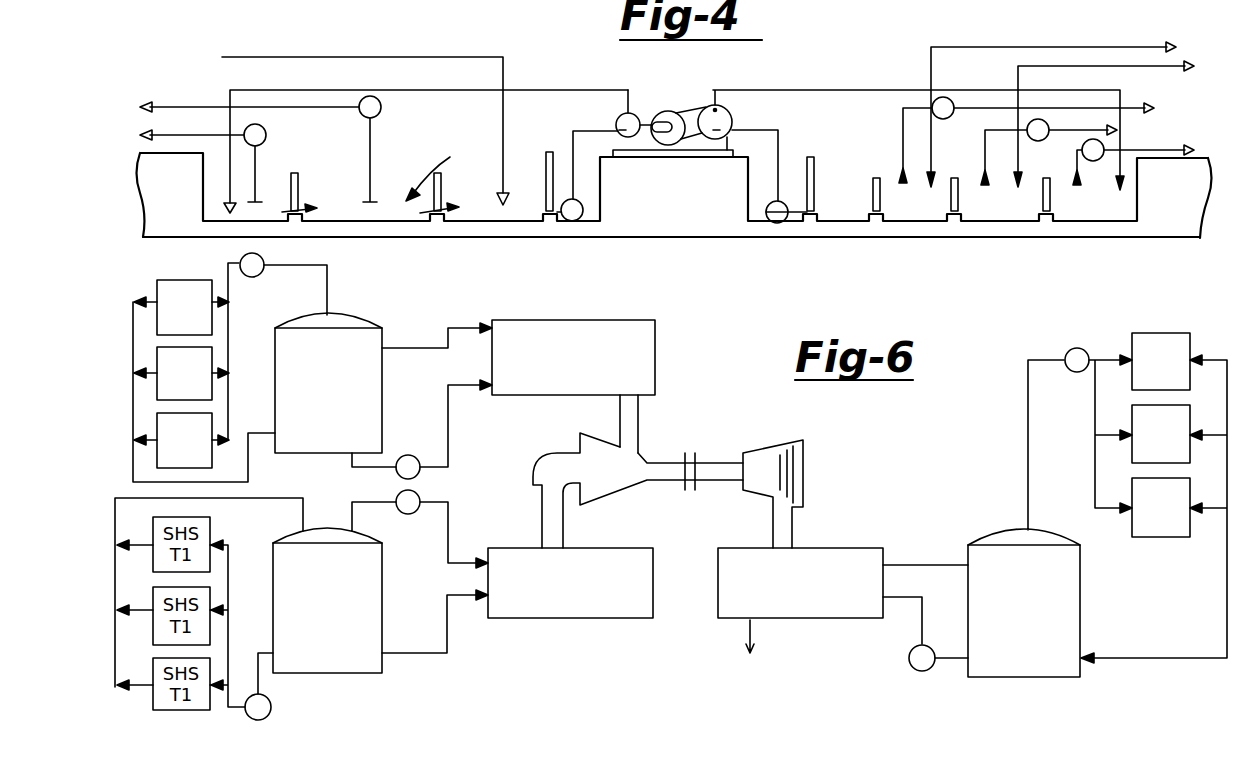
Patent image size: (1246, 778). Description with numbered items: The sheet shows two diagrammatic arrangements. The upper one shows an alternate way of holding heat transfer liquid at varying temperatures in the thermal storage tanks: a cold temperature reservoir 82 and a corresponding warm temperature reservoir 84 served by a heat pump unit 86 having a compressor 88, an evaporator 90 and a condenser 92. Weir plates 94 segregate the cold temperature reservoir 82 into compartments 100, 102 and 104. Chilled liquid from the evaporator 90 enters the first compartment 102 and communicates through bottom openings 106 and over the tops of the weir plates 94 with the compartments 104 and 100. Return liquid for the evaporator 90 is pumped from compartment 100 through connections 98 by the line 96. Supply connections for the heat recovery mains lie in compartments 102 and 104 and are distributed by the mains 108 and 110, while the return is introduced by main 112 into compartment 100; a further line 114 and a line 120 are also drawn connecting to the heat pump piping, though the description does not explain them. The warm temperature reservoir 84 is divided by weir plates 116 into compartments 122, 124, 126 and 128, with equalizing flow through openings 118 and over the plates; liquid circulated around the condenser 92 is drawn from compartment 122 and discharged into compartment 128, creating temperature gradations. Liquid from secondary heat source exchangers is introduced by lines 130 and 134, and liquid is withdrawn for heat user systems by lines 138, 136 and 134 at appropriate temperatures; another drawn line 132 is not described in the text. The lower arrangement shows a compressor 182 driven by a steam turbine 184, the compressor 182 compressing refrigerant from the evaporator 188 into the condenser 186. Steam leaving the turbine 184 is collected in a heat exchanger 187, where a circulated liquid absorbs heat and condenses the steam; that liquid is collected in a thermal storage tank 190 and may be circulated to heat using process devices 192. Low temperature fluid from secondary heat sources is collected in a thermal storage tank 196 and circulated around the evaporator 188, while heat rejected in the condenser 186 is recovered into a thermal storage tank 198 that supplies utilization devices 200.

In FIG. 4, the cold temperature reservoir 82 is at (188, 196).
In FIG. 4, the warm temperature reservoir 84 is at (1137, 218).
In FIG. 4, the heat pump unit 86 is at (675, 85).
In FIG. 4, the compressor 88 is at (683, 113).
In FIG. 4, the evaporator 90 is at (635, 112).
In FIG. 4, the condenser 92 is at (733, 118).
In FIG. 4, the weir plates 94 is at (298, 184).
In FIG. 4, the line 96 is at (573, 190).
In FIG. 4, the connections 98 is at (543, 214).
In FIG. 4, the compartment 100 is at (493, 204).
In FIG. 4, the compartment 102 is at (270, 170).
In FIG. 4, the compartment 104 is at (385, 217).
In FIG. 4, the bottom openings 106 is at (422, 218).
In FIG. 4, the main 108 is at (156, 135).
In FIG. 4, the main 110 is at (180, 77).
In FIG. 4, the main 112 is at (300, 57).
In FIG. 4, the control line 114 is at (535, 90).
In FIG. 4, the weir plates 116 is at (810, 157).
In FIG. 4, the openings 118 is at (872, 216).
In FIG. 4, the pressure line 120 is at (760, 186).
In FIG. 4, the compartment 122 is at (877, 167).
In FIG. 4, the compartment 124 is at (915, 218).
In FIG. 4, the compartment 126 is at (1017, 219).
In FIG. 4, the compartment 128 is at (1107, 208).
In FIG. 4, the line 130 is at (931, 135).
In FIG. 4, the sensor line 132 is at (985, 150).
In FIG. 4, the line 134 is at (1018, 158).
In FIG. 4, the line 136 is at (900, 112).
In FIG. 4, the line 138 is at (1077, 130).
In FIG. 6, the compressor 182 is at (654, 444).
In FIG. 6, the steam turbine 184 is at (768, 443).
In FIG. 6, the condenser 186 is at (555, 320).
In FIG. 6, the heat exchanger 187 is at (790, 620).
In FIG. 6, the evaporator 188 is at (575, 618).
In FIG. 6, the thermal storage tank 190 is at (1047, 629).
In FIG. 6, the heat using process devices 192 is at (1150, 332).
In FIG. 6, the thermal storage tank 196 is at (340, 604).
In FIG. 6, the thermal storage tank 198 is at (353, 398).
In FIG. 6, the utilization devices 200 is at (196, 268).